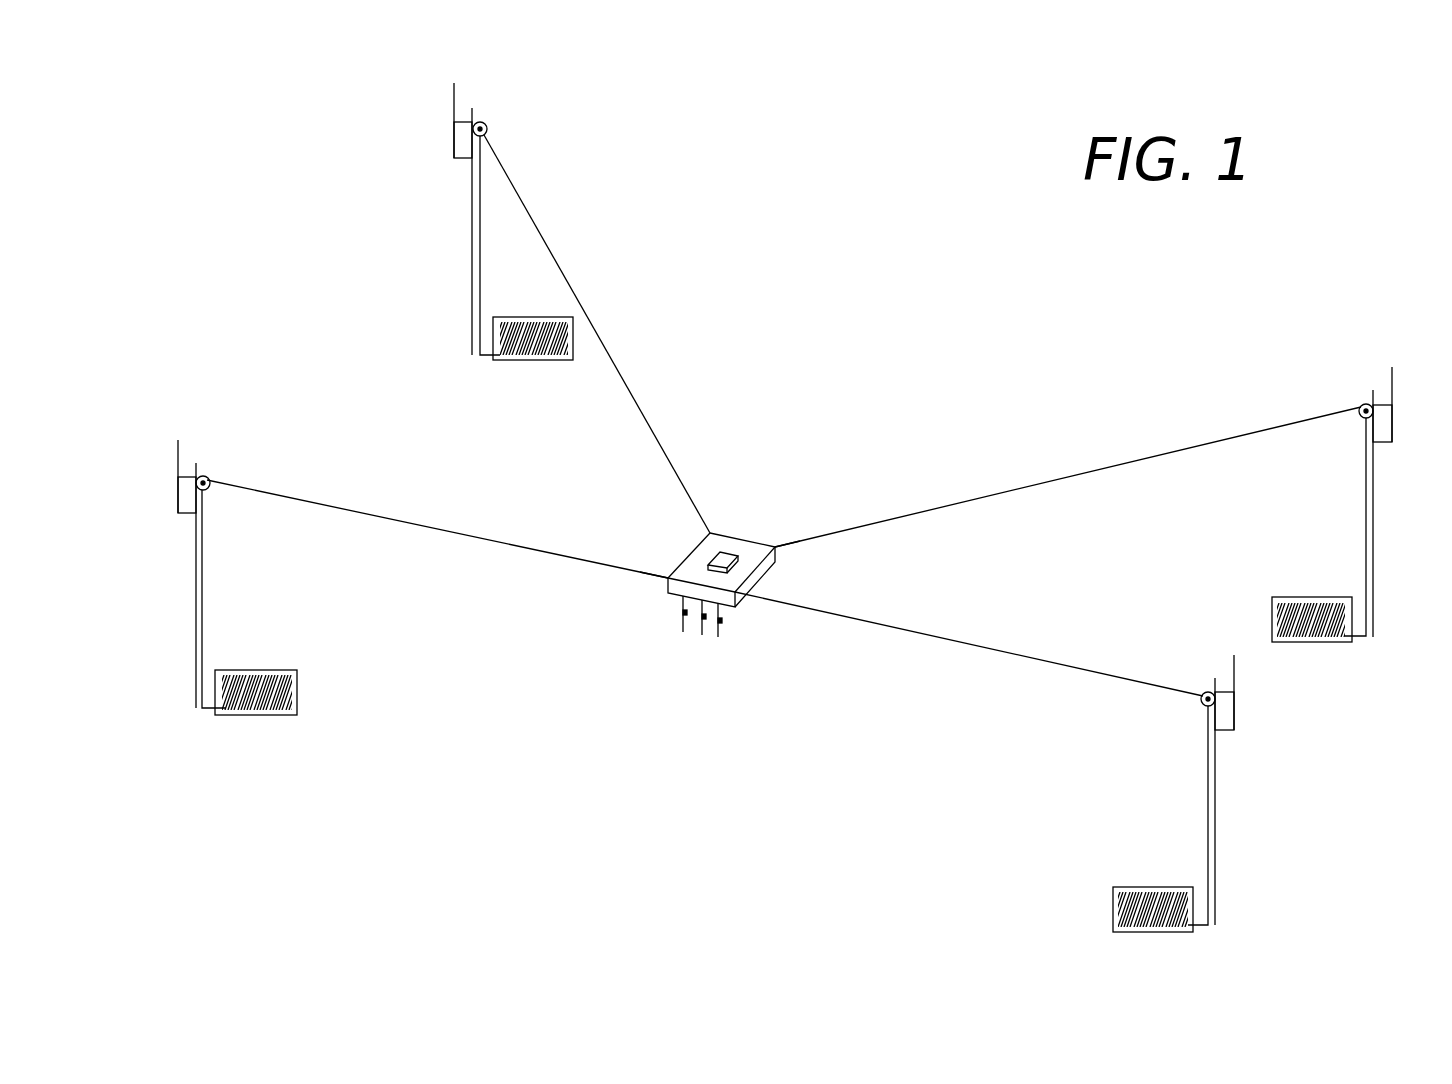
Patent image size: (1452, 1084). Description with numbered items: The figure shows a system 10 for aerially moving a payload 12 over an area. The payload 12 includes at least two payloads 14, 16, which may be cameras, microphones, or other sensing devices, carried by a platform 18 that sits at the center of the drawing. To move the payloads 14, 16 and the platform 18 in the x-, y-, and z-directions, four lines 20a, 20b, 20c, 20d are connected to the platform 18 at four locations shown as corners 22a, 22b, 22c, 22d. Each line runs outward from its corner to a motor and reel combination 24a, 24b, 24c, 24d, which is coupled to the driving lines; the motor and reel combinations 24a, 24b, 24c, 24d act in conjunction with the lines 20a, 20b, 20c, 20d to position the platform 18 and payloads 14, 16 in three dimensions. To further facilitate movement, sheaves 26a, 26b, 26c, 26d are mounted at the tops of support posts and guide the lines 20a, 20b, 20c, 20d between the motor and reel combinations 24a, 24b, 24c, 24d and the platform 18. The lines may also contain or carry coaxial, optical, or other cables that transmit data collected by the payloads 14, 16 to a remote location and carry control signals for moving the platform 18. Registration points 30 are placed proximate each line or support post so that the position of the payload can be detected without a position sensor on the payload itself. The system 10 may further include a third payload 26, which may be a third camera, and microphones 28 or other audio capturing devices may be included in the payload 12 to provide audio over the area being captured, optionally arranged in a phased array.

The system 10 is at (1016, 380).
The payload 12 is at (734, 579).
The payload 14 is at (686, 628).
The payload 16 is at (721, 638).
The platform 18 is at (766, 572).
The line 20a is at (436, 525).
The line 20b is at (552, 242).
The line 20c is at (995, 494).
The line 20d is at (952, 638).
The corner 22a is at (667, 579).
The corner 22b is at (712, 532).
The corner 22c is at (774, 548).
The corner 22d is at (734, 596).
The motor and reel combination 24a is at (257, 670).
The motor and reel combination 24b is at (507, 361).
The motor and reel combination 24c is at (1295, 597).
The motor and reel combination 24d is at (1113, 908).
The third payload 26 is at (704, 634).
The sheave 26a is at (209, 490).
The sheave 26b is at (487, 127).
The sheave 26c is at (1361, 418).
The sheave 26d is at (1201, 705).
The microphones 28 is at (687, 553).
The registration point 30 is at (178, 496).